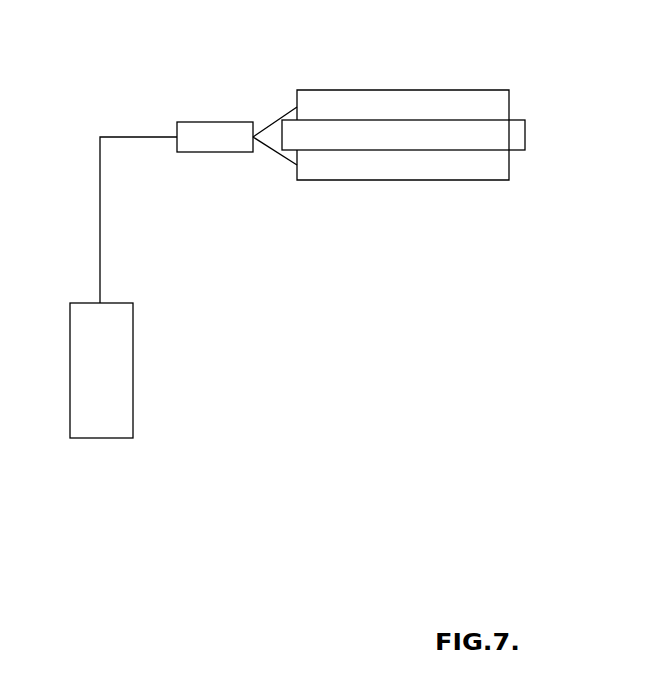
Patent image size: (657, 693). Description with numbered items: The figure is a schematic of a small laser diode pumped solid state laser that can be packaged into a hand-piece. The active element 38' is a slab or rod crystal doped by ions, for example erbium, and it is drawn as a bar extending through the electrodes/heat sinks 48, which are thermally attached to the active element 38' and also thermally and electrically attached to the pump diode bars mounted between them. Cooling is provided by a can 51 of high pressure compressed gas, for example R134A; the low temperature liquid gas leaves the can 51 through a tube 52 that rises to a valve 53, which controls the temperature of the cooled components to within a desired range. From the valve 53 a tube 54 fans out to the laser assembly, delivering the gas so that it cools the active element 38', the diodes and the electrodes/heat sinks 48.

The active element 38' is at (469, 180).
The electrodes/heat sinks 48 is at (462, 105).
The can 51 is at (117, 335).
The tube 52 is at (100, 213).
The valve 53 is at (207, 137).
The tube 54 is at (267, 123).